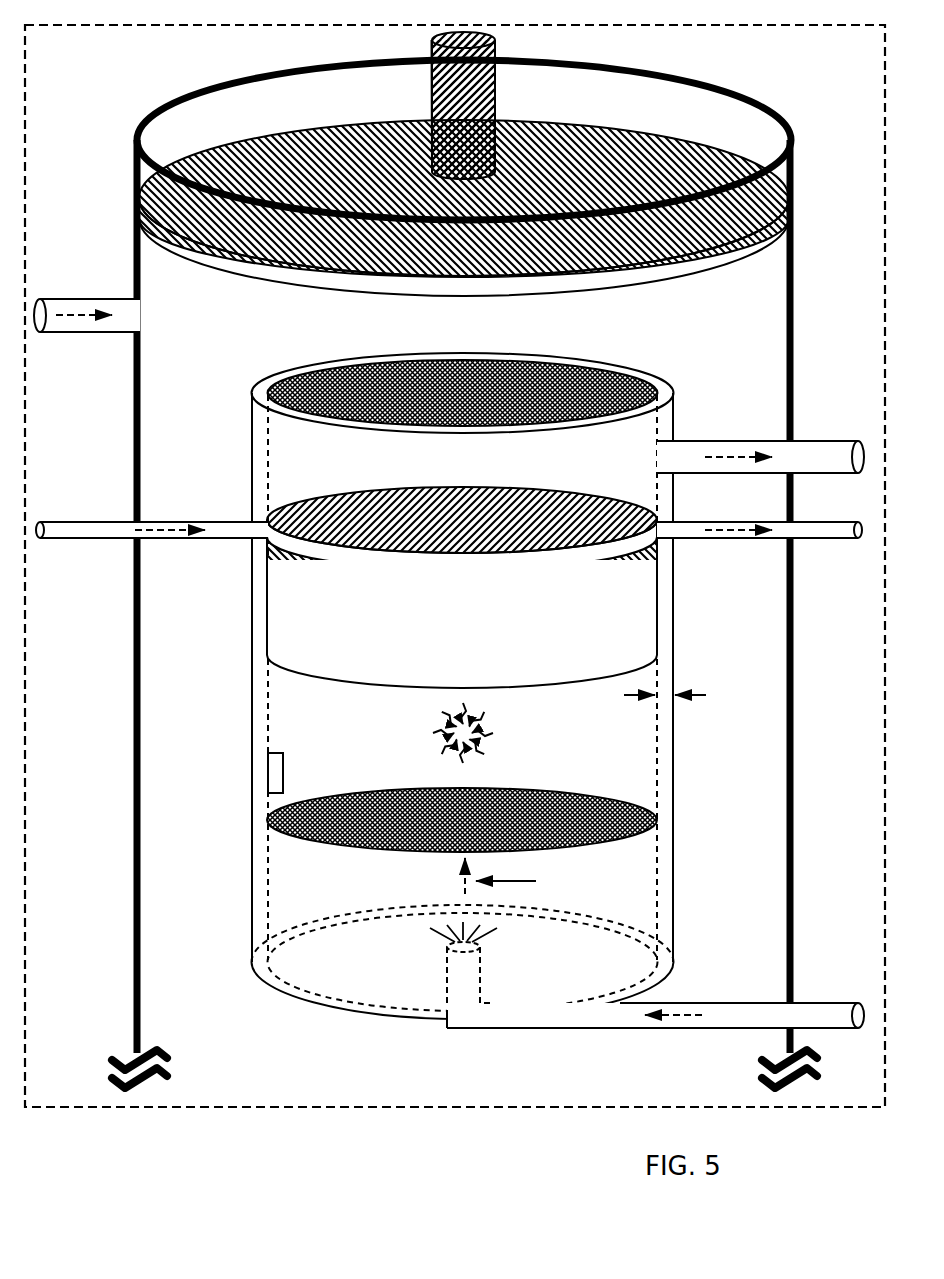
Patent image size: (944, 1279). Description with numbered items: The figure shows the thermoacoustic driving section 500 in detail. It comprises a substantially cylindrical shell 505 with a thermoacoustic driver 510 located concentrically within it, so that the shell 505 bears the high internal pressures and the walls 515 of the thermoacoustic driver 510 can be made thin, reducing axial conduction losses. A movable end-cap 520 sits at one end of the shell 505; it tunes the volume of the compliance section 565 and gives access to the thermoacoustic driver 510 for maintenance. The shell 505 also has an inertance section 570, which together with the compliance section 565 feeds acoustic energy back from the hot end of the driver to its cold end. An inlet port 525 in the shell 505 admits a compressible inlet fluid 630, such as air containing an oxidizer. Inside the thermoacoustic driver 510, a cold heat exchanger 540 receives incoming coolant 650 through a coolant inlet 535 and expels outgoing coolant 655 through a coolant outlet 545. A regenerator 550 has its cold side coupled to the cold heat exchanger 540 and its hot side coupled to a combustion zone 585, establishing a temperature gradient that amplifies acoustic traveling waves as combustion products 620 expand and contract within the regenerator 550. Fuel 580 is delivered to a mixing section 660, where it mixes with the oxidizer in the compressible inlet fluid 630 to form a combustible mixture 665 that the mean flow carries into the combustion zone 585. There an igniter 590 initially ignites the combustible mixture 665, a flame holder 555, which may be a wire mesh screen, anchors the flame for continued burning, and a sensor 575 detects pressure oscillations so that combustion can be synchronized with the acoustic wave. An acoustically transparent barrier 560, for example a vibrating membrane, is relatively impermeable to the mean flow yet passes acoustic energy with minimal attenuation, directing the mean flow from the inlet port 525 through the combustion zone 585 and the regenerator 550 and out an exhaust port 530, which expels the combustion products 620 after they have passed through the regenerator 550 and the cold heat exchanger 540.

The thermoacoustic driving section 500 is at (68, 57).
The shell 505 is at (794, 262).
The thermoacoustic driver 510 is at (253, 622).
The walls of the thermoacoustic driver 515 is at (688, 680).
The movable end-cap 520 is at (545, 135).
The inlet port 525 is at (91, 298).
The exhaust port 530 is at (820, 441).
The coolant inlet 535 is at (103, 520).
The cold heat exchanger 540 is at (507, 504).
The coolant outlet 545 is at (820, 539).
The regenerator 550 is at (370, 688).
The flame holder 555 is at (565, 818).
The acoustically transparent barrier 560 is at (553, 372).
The compliance section 565 is at (724, 296).
The inertance section 570 is at (176, 691).
The sensor 575 is at (266, 780).
The fuel 580 is at (688, 1022).
The combustion zone 585 is at (600, 744).
The igniter 590 is at (456, 757).
The combustion products 620 is at (718, 455).
The compressible inlet fluid 630 is at (50, 320).
The incoming coolant 650 is at (157, 536).
The outgoing coolant 655 is at (752, 531).
The mixing section 660 is at (333, 890).
The combustible mixture 665 is at (530, 880).